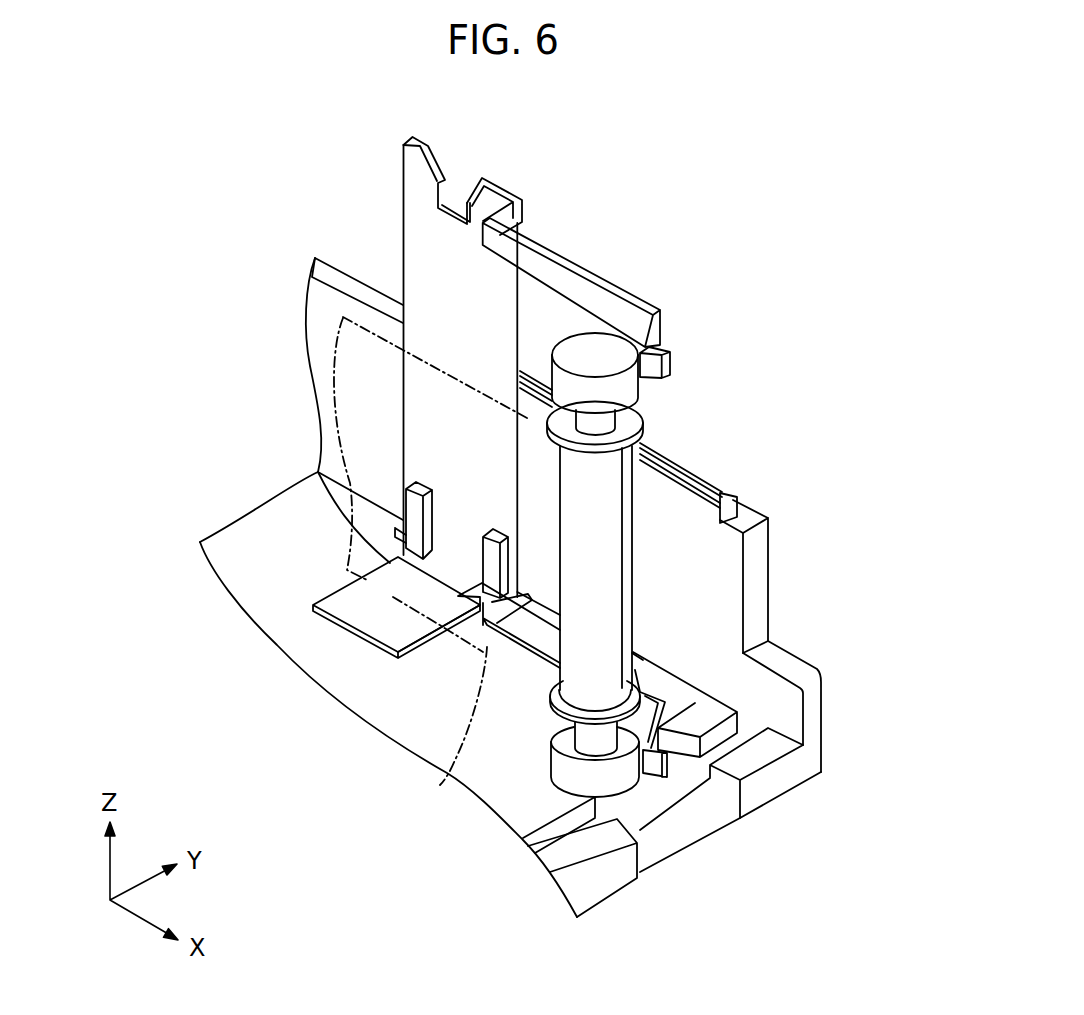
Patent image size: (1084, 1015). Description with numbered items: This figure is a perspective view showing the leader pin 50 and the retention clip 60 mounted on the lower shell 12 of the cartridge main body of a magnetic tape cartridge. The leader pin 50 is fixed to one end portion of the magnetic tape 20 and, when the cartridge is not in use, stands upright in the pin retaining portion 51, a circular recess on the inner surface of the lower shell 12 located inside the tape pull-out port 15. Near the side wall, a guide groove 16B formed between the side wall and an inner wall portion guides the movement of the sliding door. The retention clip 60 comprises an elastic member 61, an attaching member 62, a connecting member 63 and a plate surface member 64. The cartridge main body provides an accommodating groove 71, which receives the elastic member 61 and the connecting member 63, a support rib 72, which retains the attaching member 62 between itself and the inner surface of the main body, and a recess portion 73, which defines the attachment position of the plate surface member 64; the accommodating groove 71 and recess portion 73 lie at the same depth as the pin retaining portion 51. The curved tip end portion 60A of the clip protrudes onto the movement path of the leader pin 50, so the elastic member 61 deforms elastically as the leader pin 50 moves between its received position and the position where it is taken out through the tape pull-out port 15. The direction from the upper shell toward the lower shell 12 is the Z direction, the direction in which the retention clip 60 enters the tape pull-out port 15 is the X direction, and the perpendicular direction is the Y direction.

The lower shell 12 is at (822, 537).
The tape pull-out port 15 is at (715, 774).
The guide groove 16B is at (533, 857).
The magnetic tape 20 is at (437, 788).
The leader pin 50 is at (600, 517).
The pin retaining portion 51 is at (540, 762).
The retention clip 60 is at (565, 467).
The curved tip end portion 60A is at (668, 362).
The elastic member 61 is at (587, 268).
The attaching member 62 is at (433, 386).
The connecting member 63 is at (497, 210).
The plate surface member 64 is at (377, 617).
The accommodating groove 71 is at (652, 722).
The support rib 72 is at (490, 557).
The recess portion 73 is at (373, 618).